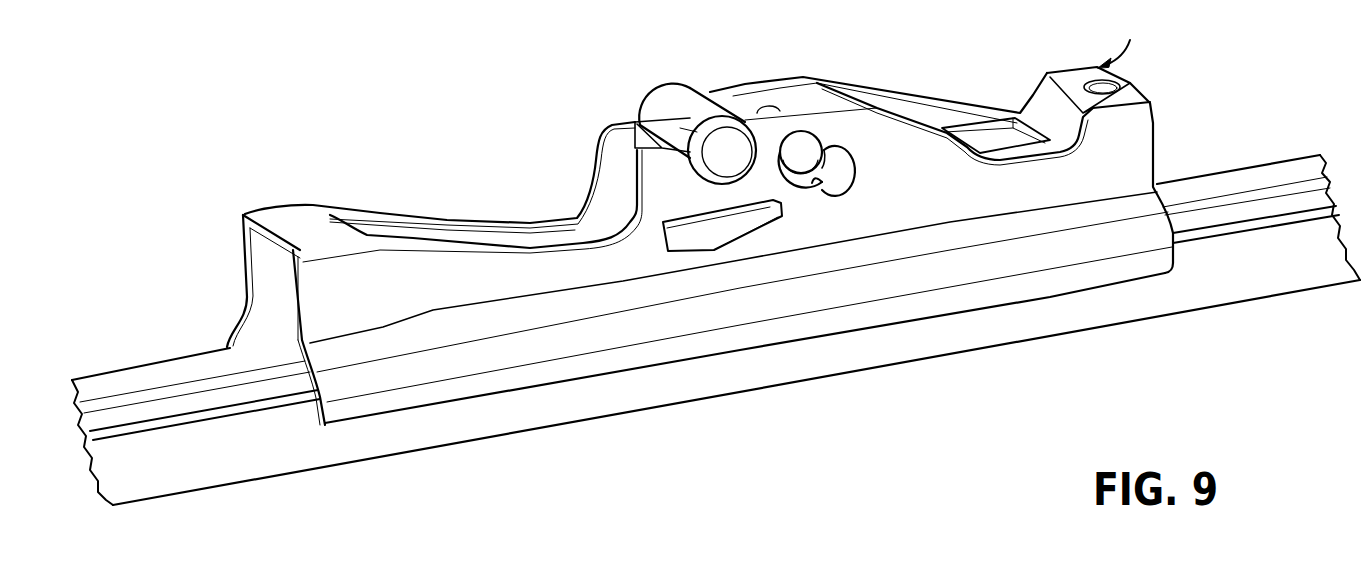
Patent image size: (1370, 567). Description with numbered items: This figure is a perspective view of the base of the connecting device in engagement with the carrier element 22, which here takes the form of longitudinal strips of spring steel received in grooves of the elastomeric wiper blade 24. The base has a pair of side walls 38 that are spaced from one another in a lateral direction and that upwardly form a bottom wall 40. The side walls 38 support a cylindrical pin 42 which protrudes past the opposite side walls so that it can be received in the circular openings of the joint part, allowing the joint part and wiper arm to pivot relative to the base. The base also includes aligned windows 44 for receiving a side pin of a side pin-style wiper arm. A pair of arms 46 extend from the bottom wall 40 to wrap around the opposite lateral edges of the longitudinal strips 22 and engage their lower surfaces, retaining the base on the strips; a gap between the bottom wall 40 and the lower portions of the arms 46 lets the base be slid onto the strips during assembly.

The carrier element 22 is at (1287, 162).
The wiper blade 24 is at (728, 380).
The side walls 38 is at (427, 260).
The bottom wall 40 is at (1013, 267).
The cylindrical pin 42 is at (676, 92).
The windows 44 is at (853, 150).
The arms 46 is at (458, 390).